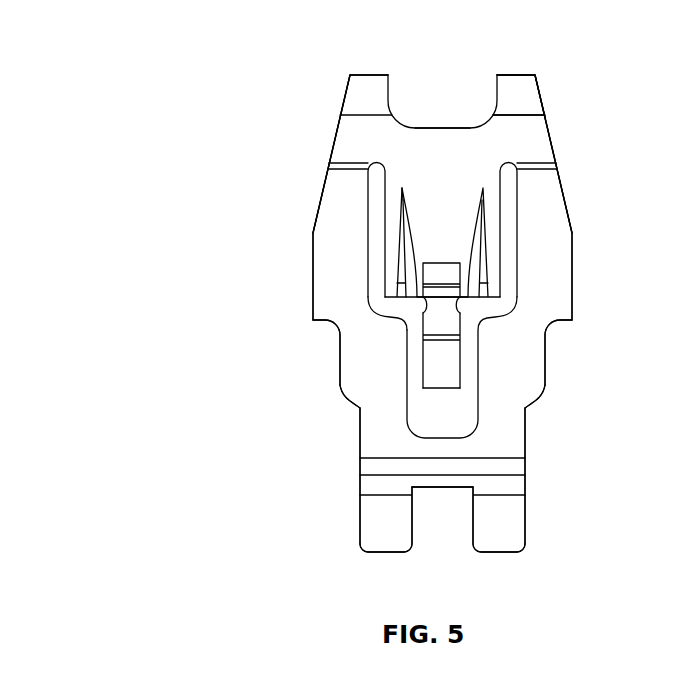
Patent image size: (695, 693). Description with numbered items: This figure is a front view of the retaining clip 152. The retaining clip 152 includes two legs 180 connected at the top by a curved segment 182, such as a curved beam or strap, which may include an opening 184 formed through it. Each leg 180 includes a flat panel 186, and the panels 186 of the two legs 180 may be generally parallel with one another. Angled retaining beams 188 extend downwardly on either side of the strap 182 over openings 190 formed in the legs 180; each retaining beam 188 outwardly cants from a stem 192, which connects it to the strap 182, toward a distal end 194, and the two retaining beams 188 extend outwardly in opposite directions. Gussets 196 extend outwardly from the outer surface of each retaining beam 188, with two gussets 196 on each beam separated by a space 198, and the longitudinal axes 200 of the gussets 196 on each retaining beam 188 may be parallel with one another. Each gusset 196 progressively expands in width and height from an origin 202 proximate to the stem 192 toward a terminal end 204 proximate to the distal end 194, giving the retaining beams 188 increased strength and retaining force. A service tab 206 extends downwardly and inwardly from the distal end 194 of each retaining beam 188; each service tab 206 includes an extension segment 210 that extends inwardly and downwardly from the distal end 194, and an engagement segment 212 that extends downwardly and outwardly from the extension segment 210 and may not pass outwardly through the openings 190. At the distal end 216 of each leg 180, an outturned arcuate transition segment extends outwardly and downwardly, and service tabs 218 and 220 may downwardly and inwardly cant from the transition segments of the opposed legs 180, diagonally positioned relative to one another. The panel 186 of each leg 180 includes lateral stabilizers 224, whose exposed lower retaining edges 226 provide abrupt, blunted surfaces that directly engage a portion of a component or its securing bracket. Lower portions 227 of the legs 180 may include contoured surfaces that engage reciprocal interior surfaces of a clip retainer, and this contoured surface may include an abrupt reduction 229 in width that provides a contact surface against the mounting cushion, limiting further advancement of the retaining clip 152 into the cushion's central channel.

The retaining clip 152 is at (295, 88).
The leg 180 is at (550, 265).
The curved segment 182 is at (514, 75).
The opening 184 is at (435, 88).
The flat panel 186 is at (358, 408).
The retaining beam 188 is at (455, 175).
The opening 190 is at (510, 255).
The stem 192 is at (397, 172).
The distal end 194 is at (404, 302).
The gusset 196 is at (400, 228).
The space 198 is at (440, 242).
The longitudinal axis 200 is at (400, 263).
The origin 202 is at (400, 190).
The terminal end 204 is at (398, 326).
The service tab 206 is at (442, 377).
The extension segment 210 is at (452, 318).
The engagement segment 212 is at (422, 370).
The distal end 216 is at (484, 447).
The service tab 218 is at (373, 542).
The service tab 220 is at (512, 543).
The lateral stabilizer 224 is at (320, 232).
The lower retaining edge 226 is at (325, 322).
The lower portion 227 is at (528, 402).
The abrupt reduction 229 is at (368, 403).